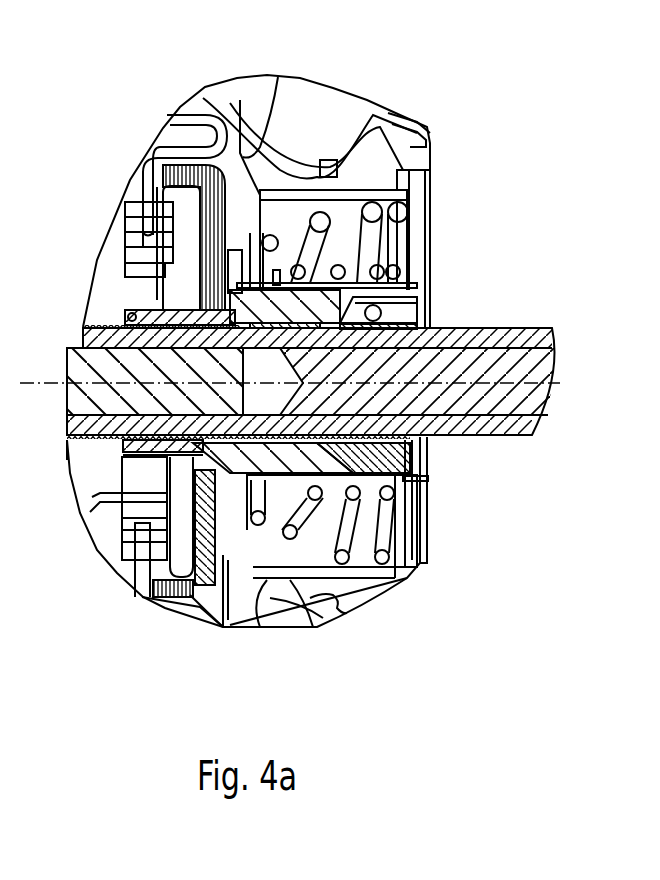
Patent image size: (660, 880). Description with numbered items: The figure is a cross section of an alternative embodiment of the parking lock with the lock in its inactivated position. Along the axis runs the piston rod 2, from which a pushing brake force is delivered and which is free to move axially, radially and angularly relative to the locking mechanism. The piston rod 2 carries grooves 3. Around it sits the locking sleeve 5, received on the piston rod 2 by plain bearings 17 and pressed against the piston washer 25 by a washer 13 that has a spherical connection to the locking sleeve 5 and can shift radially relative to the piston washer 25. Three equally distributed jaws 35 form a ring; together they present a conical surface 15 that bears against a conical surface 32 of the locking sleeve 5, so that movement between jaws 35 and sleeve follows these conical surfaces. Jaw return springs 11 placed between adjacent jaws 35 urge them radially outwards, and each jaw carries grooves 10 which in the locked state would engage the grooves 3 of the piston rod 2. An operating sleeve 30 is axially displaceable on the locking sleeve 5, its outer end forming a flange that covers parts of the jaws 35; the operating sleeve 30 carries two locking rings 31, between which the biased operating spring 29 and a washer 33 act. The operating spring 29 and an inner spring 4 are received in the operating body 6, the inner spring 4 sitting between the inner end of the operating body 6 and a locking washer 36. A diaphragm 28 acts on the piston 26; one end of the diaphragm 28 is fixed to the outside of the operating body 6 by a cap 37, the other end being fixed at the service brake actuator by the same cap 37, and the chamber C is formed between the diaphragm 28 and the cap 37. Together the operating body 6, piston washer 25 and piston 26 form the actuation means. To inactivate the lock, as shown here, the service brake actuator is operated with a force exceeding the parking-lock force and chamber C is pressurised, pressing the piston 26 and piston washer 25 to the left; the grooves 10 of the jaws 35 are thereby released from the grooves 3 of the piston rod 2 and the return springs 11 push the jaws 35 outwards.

The piston rod 2 is at (540, 368).
The grooves of the piston rod 3 is at (90, 450).
The inner spring 4 is at (423, 227).
The locking sleeve 5 is at (218, 316).
The operating body 6 is at (417, 183).
The grooves of the jaws 10 is at (425, 487).
The jaw return springs 11 is at (440, 303).
The washer 13 is at (197, 605).
The conical surface of the jaws 15 is at (440, 318).
The plain bearings 17 is at (123, 303).
The piston washer 25 is at (143, 593).
The piston 26 is at (190, 117).
The diaphragm 28 is at (418, 150).
The operating spring 29 is at (420, 255).
The operating sleeve 30 is at (427, 455).
The locking rings 31 is at (440, 285).
The conical surface of the locking sleeve 32 is at (433, 530).
The washer 33 is at (393, 577).
The jaws 35 is at (425, 458).
The locking washer 36 is at (278, 77).
The cap 37 is at (400, 113).
The chamber C is at (327, 107).